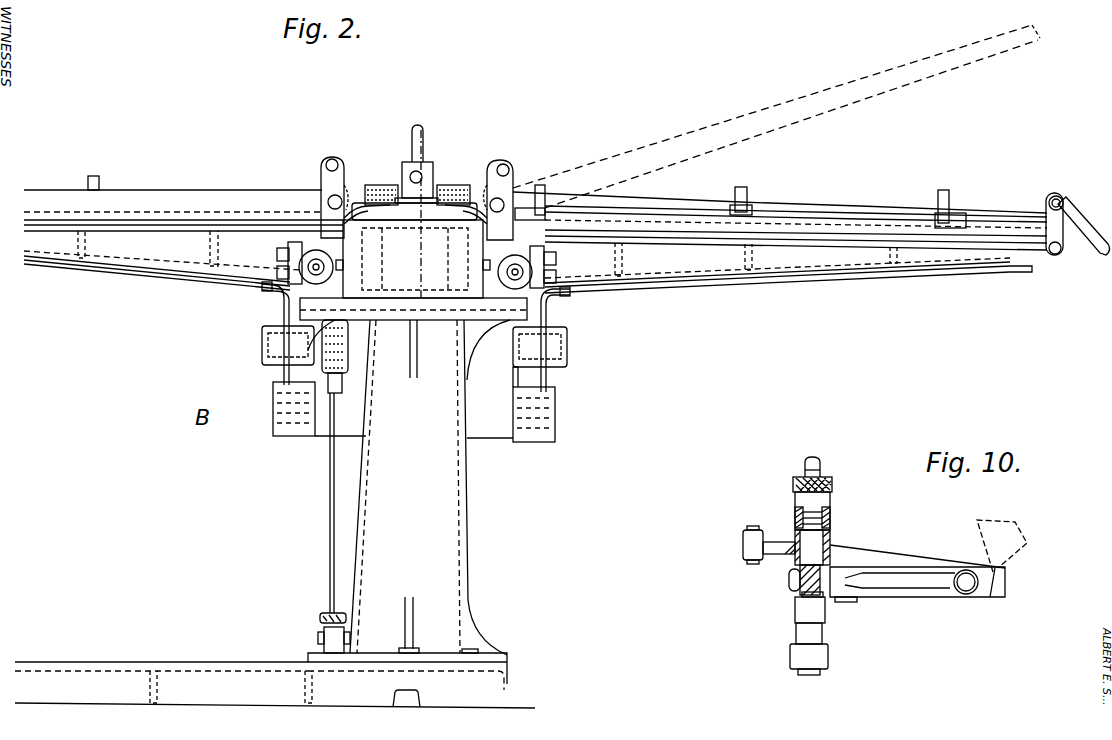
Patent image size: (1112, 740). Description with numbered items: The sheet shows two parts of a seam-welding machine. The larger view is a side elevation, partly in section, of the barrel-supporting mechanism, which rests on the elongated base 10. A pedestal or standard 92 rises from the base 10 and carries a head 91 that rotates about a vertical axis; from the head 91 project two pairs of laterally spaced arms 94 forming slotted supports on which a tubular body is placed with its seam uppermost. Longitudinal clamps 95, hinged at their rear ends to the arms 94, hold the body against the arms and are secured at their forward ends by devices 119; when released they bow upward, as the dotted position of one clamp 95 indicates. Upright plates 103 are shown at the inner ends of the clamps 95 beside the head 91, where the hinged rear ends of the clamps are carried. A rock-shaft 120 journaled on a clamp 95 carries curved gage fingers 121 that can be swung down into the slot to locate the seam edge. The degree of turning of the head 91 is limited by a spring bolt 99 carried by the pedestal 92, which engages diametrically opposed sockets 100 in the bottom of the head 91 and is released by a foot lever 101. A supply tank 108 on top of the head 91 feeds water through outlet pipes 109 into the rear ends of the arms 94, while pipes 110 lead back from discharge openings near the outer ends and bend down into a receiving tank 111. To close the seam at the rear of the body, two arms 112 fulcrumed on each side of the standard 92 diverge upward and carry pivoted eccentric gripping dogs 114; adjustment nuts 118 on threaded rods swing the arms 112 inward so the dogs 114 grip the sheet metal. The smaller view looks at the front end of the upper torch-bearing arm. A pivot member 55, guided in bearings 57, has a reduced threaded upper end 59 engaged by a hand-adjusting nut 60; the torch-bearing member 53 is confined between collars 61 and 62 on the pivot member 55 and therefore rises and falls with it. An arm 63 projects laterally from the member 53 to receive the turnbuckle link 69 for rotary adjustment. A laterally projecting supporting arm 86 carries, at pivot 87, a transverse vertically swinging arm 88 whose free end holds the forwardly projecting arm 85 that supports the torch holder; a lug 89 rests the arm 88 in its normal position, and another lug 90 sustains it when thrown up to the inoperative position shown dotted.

In FIG. 2, the elongated base 10 is at (148, 660).
In FIG. 2, the head 91 is at (413, 215).
In FIG. 2, the pedestal or standard 92 is at (455, 540).
In FIG. 2, the laterally spaced arms 94 is at (138, 262).
In FIG. 2, the longitudinal clamps 95 is at (198, 190).
In FIG. 2, the spring bolt 99 is at (348, 355).
In FIG. 2, the sockets 100 is at (492, 330).
In FIG. 2, the foot lever 101 is at (320, 619).
In FIG. 2, the clamp plate 103 is at (322, 172).
In FIG. 2, the supply tank 108 is at (384, 187).
In FIG. 2, the outlet pipes 109 is at (357, 205).
In FIG. 2, the pipes 110 is at (52, 258).
In FIG. 2, the receiving tank 111 is at (305, 440).
In FIG. 2, the arms 112 is at (284, 306).
In FIG. 2, the gripping dogs 114 is at (548, 272).
In FIG. 2, the adjustment nuts 118 is at (298, 268).
In FIG. 2, the securing devices 119 is at (1083, 224).
In FIG. 2, the rock-shaft 120 is at (796, 210).
In FIG. 2, the gage fingers 121 is at (95, 176).
In FIG. 10, the torch-bearing member 53 is at (792, 578).
In FIG. 10, the pivot member 55 is at (802, 629).
In FIG. 10, the bearings 57 is at (831, 517).
In FIG. 10, the threaded portion 59 is at (821, 465).
In FIG. 10, the hand-adjusting nut 60 is at (787, 480).
In FIG. 10, the collar 61 is at (831, 539).
In FIG. 10, the collar 62 is at (826, 617).
In FIG. 10, the arm 63 is at (793, 562).
In FIG. 10, the link 69 is at (741, 543).
In FIG. 10, the forwardly projecting arm 85 is at (812, 590).
In FIG. 10, the supporting arm 86 is at (925, 561).
In FIG. 10, the pivot 87 is at (971, 591).
In FIG. 10, the swinging arm 88 is at (918, 587).
In FIG. 10, the lug 89 is at (862, 598).
In FIG. 10, the lug 90 is at (1003, 580).